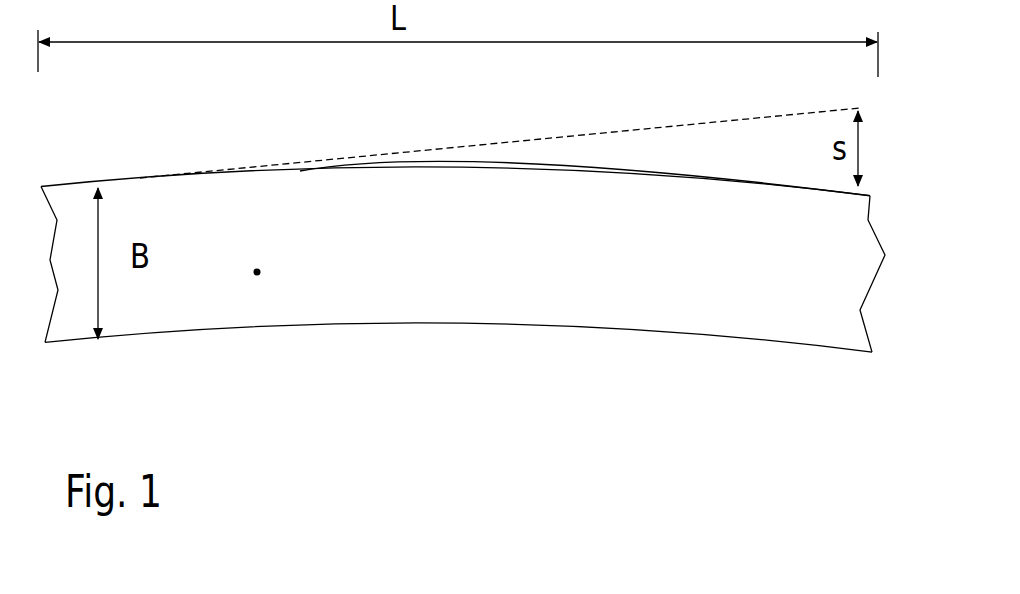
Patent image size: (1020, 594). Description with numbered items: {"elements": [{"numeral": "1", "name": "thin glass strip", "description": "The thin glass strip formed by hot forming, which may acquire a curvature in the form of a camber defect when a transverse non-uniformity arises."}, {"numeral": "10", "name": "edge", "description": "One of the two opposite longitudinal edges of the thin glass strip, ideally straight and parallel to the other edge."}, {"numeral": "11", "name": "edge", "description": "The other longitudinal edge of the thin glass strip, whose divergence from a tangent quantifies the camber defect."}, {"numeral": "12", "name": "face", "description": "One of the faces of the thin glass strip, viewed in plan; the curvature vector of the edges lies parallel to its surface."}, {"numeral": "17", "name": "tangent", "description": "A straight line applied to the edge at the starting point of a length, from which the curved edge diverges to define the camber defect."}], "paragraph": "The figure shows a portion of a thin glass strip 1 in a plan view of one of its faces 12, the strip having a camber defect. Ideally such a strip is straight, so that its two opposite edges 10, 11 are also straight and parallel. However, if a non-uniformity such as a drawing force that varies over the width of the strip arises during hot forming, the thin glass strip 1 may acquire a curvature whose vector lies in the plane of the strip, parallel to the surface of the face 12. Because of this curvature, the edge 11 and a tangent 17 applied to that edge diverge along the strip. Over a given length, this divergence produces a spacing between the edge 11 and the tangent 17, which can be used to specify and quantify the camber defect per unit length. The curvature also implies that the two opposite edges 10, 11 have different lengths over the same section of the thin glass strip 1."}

The cutting blade / blade body 1 is at (586, 336).
The bottom surface of blade 10 is at (690, 337).
The top surface of blade 11 is at (622, 175).
The center of blade 12 is at (257, 272).
The tangent line / chord 17 is at (538, 139).